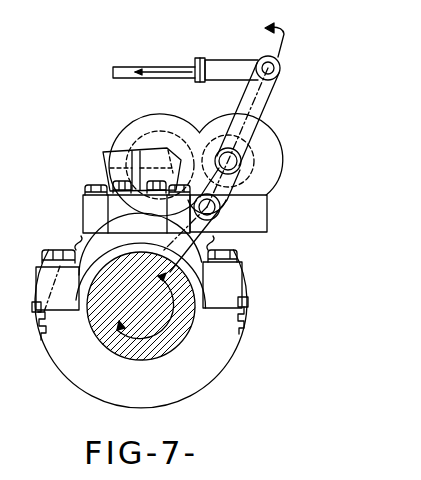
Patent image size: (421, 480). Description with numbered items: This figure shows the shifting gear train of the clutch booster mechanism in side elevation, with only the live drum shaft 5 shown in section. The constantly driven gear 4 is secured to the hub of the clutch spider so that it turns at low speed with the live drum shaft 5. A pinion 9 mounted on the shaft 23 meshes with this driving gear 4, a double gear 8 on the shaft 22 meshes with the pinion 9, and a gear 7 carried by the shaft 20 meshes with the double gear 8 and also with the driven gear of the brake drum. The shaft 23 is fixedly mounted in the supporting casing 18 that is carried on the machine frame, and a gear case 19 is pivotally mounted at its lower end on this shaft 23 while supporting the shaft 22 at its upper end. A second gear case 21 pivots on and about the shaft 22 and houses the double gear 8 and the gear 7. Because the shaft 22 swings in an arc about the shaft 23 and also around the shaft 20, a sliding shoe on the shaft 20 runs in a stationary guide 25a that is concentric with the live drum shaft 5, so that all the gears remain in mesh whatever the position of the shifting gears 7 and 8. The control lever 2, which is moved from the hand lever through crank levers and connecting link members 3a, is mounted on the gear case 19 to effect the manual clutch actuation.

The control lever 2 is at (298, 97).
The connecting link members 3a is at (148, 65).
The gear 4 is at (243, 317).
The live drum shaft 5 is at (257, 397).
The gear 7 is at (160, 135).
The double gear 8 is at (236, 159).
The pinion 9 is at (215, 205).
The supporting casing 18 is at (252, 218).
The gear case 19 is at (277, 163).
The shaft 20 is at (105, 166).
The gear case 21 is at (168, 121).
The shaft 22 is at (242, 162).
The shaft 23 is at (213, 216).
The stationary guide 25a is at (115, 160).